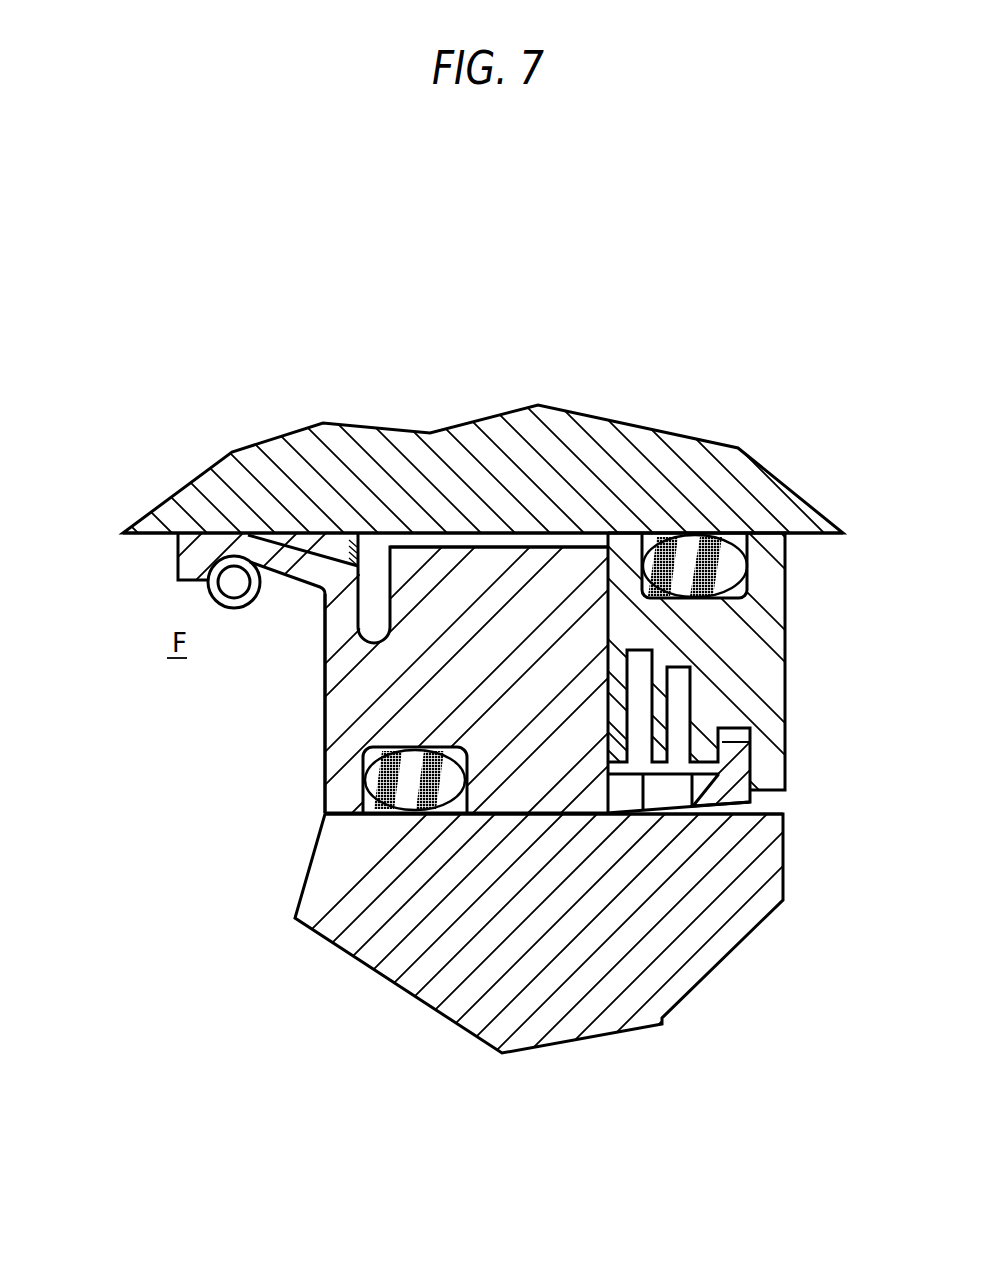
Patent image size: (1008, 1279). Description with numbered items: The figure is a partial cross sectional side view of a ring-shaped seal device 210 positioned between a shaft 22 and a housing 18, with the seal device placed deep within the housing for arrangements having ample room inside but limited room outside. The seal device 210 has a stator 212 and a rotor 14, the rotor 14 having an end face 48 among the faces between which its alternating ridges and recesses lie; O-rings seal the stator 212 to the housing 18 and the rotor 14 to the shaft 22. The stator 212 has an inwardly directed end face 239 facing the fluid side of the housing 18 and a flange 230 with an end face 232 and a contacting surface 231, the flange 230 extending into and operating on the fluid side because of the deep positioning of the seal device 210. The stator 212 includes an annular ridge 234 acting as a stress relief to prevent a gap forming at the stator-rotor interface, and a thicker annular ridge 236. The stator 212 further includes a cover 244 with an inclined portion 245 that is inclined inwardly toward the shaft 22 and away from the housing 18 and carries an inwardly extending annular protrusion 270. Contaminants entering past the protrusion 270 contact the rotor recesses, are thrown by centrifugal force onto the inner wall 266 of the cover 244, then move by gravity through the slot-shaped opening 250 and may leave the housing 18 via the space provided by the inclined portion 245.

The rotor 14 is at (752, 649).
The housing 18 is at (673, 990).
The shaft 22 is at (640, 443).
The end face 48 is at (787, 678).
The seal device 210 is at (205, 732).
The stator 212 is at (325, 707).
The flange 230 is at (280, 557).
The contacting surface 231 is at (227, 557).
The end face 232 is at (180, 535).
The annular ridge 234 is at (377, 587).
The annular ridge 236 is at (472, 577).
The inwardly directed end face 239 is at (325, 768).
The cover 244 is at (540, 815).
The inclined portion 245 is at (730, 814).
The slot-shaped opening 250 is at (676, 792).
The inner wall 266 is at (643, 815).
The annular protrusion 270 is at (735, 767).